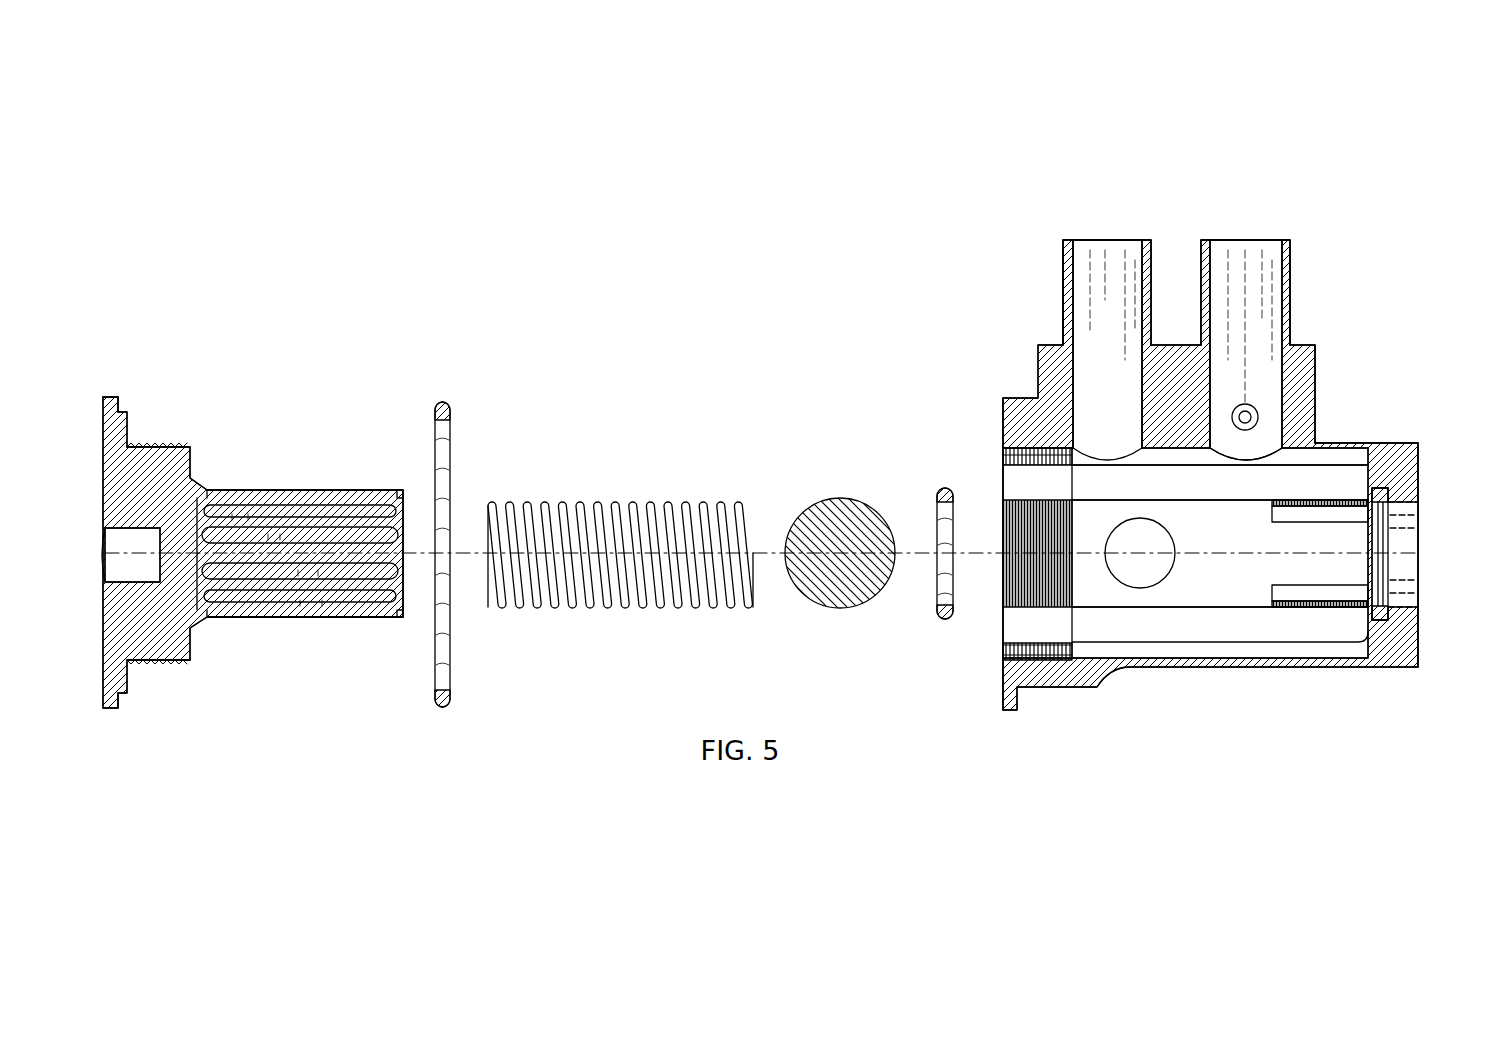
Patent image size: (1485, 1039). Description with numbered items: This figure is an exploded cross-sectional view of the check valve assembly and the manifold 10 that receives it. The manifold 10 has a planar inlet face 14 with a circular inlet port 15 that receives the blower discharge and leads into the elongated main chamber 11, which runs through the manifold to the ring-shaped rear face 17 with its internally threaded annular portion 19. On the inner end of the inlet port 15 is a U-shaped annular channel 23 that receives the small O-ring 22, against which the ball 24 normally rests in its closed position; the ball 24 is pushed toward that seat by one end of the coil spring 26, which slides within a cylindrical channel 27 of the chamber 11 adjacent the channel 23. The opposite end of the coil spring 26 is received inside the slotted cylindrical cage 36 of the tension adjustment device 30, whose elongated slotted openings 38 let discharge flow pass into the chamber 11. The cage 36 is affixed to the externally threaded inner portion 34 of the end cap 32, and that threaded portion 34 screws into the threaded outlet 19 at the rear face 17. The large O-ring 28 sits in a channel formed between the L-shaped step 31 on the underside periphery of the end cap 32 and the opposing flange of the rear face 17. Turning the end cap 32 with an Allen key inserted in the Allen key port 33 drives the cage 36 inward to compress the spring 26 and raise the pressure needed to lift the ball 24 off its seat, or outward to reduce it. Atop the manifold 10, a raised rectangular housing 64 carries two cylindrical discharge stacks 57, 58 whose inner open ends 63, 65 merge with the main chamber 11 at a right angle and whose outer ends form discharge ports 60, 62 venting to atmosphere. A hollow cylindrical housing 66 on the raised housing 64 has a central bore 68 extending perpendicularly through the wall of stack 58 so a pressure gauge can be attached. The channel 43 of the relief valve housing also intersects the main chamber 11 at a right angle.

The manifold 10 is at (1115, 684).
The main chamber 11 is at (1228, 540).
The inlet face 14 is at (1418, 450).
The inlet port 15 is at (1405, 605).
The rear face 17 is at (1003, 398).
The internally-threaded annular portion 19 is at (1005, 452).
The small O-ring 22 is at (950, 582).
The annular channel 23 is at (1388, 492).
The ball 24 is at (812, 508).
The coil spring 26 is at (757, 500).
The cylindrical channel 27 is at (1290, 608).
The large O-ring 28 is at (452, 492).
The tension adjustment device 30 is at (225, 458).
The L-shaped step 31 is at (120, 412).
The end cap 32 is at (103, 396).
The Allen key port 33 is at (165, 661).
The externally-threaded annular inner portion 34 is at (162, 446).
The slotted cylindrical cage 36 is at (350, 489).
The slotted openings 38 is at (285, 572).
The channel 43 is at (1142, 566).
The discharge stack 57 is at (1291, 290).
The discharge stack 58 is at (1061, 298).
The discharge port 60 is at (1245, 240).
The discharge port 62 is at (1108, 240).
The inner open end 63 is at (1080, 463).
The raised rectangular housing 64 is at (1316, 393).
The inner open end 65 is at (1277, 473).
The cylindrical housing 66 is at (1251, 417).
The central bore 68 is at (1250, 405).